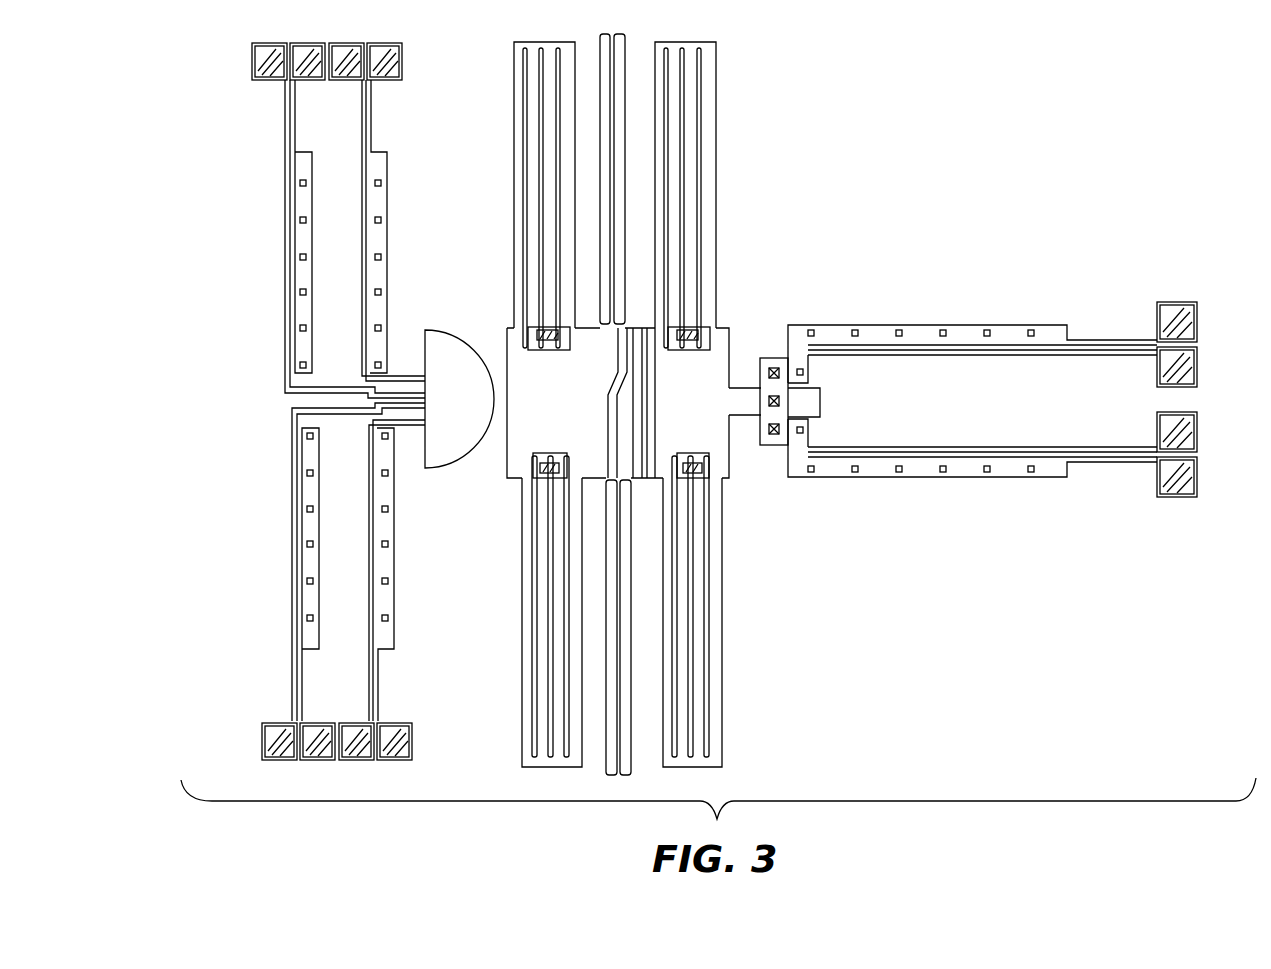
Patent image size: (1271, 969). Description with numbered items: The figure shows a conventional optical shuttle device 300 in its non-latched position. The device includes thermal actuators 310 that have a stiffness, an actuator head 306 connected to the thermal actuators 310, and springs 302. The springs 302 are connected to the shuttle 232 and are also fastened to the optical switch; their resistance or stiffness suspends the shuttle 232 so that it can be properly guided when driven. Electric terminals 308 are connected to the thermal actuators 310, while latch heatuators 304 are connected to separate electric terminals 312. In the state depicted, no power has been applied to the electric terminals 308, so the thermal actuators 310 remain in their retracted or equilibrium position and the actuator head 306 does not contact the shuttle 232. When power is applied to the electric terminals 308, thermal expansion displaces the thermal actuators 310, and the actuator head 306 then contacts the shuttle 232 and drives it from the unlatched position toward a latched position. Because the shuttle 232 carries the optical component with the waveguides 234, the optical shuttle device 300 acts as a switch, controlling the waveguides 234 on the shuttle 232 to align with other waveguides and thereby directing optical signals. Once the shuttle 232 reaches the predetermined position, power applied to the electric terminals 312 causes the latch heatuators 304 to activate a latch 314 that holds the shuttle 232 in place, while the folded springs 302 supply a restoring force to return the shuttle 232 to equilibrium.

The optical shuttle device 300 is at (968, 118).
The springs 302 is at (777, 149).
The latch heatuators 304 is at (918, 328).
The actuator head 306 is at (493, 297).
The electric terminals 308 is at (400, 60).
The thermal actuators 310 is at (387, 173).
The electric terminals 312 is at (1168, 310).
The latch 314 is at (752, 412).
The shuttle 232 is at (724, 355).
The waveguides 234 is at (612, 412).